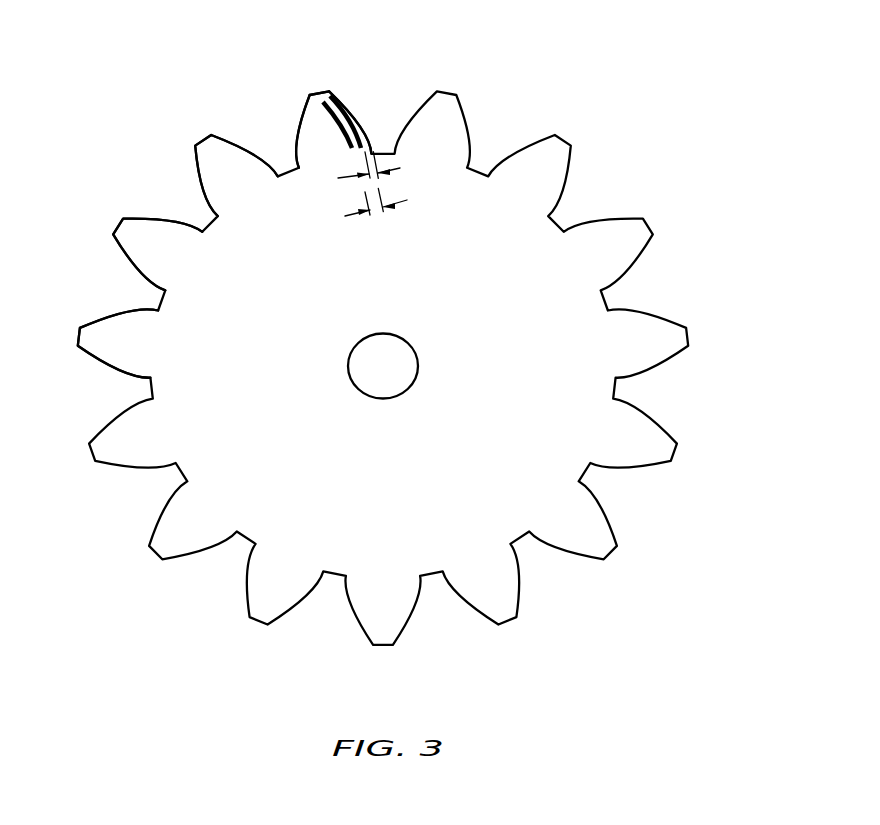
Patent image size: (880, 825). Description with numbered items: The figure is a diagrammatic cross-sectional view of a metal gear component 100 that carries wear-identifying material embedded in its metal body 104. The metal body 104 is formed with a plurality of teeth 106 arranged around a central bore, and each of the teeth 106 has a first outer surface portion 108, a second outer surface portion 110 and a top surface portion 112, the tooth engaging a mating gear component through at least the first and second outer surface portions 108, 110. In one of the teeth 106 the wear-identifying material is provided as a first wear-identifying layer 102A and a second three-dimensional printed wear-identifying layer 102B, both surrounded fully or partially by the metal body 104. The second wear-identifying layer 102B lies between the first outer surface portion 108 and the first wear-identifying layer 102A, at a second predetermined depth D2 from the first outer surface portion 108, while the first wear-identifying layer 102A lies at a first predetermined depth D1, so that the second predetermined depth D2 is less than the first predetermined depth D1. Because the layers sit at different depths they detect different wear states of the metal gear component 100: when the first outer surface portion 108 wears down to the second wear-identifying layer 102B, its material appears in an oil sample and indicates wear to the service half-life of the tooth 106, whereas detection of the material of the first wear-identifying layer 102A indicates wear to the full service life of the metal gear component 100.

The metal gear component 100 is at (705, 53).
The metal body 104 is at (540, 240).
The teeth 106 is at (200, 138).
The first outer surface portion 108 is at (362, 114).
The second outer surface portion 110 is at (299, 116).
The top surface portion 112 is at (313, 93).
The first wear-identifying layer 102A is at (336, 130).
The second three-dimensional printed wear-identifying layer 102B is at (344, 118).
The first predetermined depth D1 is at (381, 212).
The second predetermined depth D2 is at (398, 168).